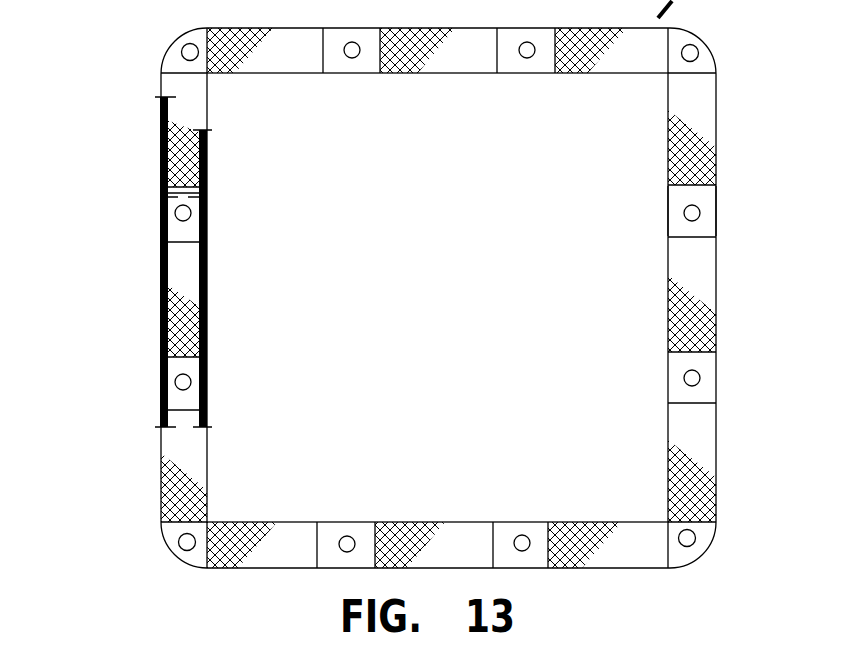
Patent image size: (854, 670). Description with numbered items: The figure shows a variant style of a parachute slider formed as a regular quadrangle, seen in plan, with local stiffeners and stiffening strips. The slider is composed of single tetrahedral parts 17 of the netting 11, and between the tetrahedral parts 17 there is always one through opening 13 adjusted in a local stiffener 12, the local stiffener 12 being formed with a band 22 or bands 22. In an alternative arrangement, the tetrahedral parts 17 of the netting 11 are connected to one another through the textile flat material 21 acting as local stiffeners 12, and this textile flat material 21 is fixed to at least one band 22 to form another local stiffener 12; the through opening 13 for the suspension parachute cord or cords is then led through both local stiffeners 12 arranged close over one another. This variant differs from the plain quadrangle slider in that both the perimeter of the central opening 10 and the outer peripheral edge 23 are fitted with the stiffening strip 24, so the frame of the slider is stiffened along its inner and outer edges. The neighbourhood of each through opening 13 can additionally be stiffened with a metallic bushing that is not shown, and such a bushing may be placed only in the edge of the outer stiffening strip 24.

The central opening 10 is at (525, 219).
The netting 11 is at (183, 503).
The local stiffener 12 is at (186, 218).
The through opening 13 is at (183, 46).
The tetrahedral part 17 is at (290, 75).
The textile flat material 21 is at (177, 63).
The band 22 is at (197, 222).
The outer peripheral edge 23 is at (717, 232).
The stiffening strip 24 is at (160, 130).